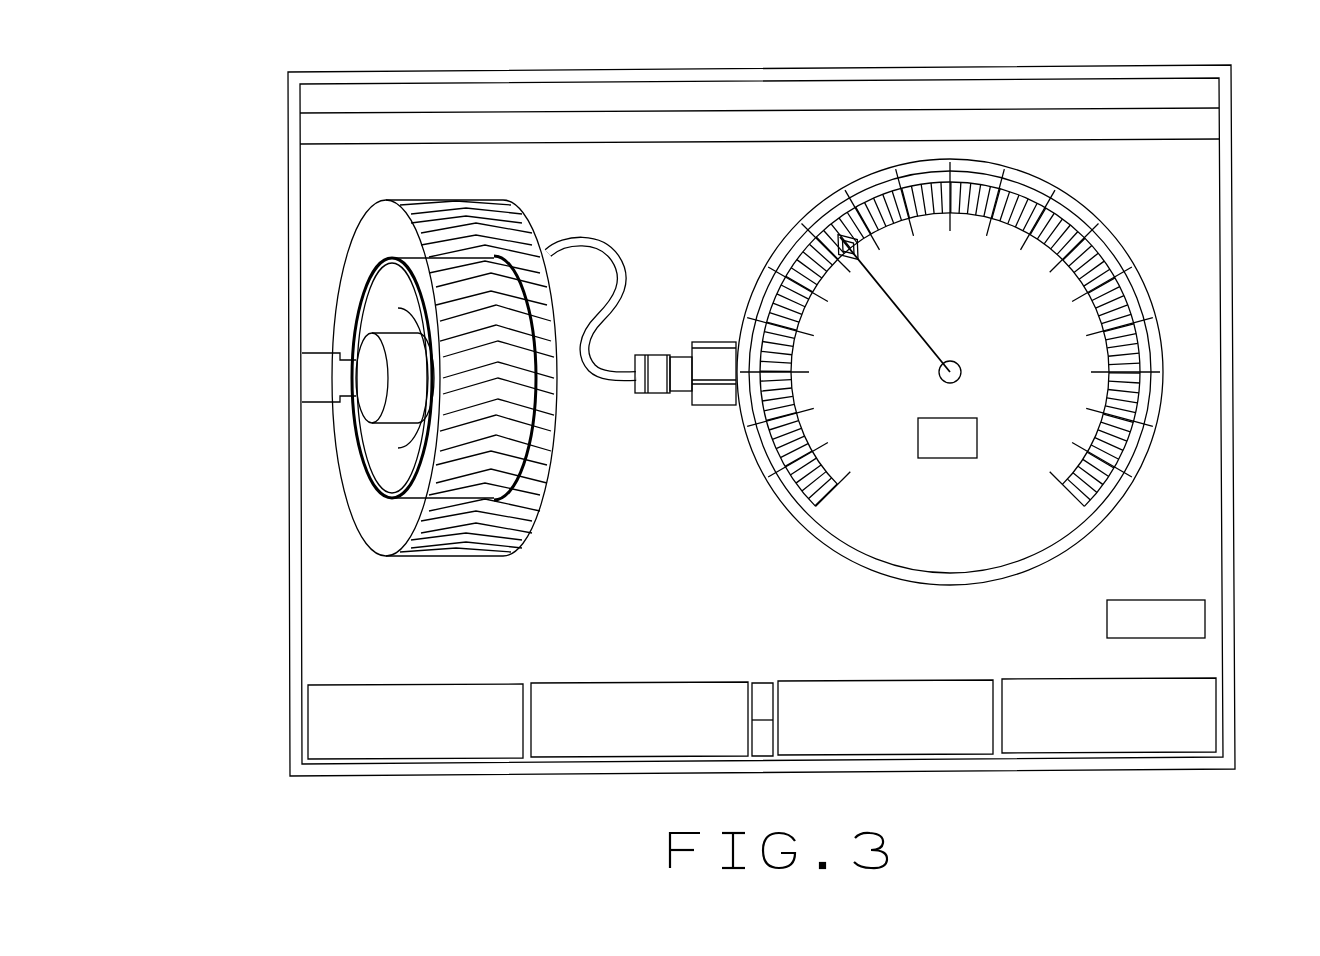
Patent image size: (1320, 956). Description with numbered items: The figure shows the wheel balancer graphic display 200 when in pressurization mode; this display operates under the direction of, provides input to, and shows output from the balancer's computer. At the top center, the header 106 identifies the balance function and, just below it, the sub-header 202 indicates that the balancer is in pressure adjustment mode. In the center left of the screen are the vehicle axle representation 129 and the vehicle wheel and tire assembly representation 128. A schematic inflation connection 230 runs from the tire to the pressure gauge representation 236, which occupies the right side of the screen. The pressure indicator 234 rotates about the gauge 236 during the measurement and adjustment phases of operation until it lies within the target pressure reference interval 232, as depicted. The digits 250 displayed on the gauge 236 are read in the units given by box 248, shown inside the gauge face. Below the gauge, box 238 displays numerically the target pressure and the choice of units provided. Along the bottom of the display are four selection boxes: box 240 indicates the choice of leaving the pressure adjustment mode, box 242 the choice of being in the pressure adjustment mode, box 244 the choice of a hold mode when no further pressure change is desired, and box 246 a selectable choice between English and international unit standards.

The graphic display 200 is at (262, 137).
The header 106 is at (830, 93).
The sub-header 202 is at (632, 124).
The vehicle wheel and tire assembly representation 128 is at (322, 309).
The vehicle axle representation 129 is at (317, 412).
The inflation connection 230 is at (663, 332).
The target pressure reference interval 232 is at (826, 218).
The pressure indicator 234 is at (930, 318).
The pressure gauge representation 236 is at (1158, 381).
The target pressure box 238 is at (1165, 586).
The exit box 240 is at (294, 720).
The pressure adjustment mode box 242 is at (665, 774).
The hold mode box 244 is at (924, 769).
The unit standard selection box 246 is at (1121, 762).
The units box 248 is at (947, 478).
The gauge digits 250 is at (849, 438).